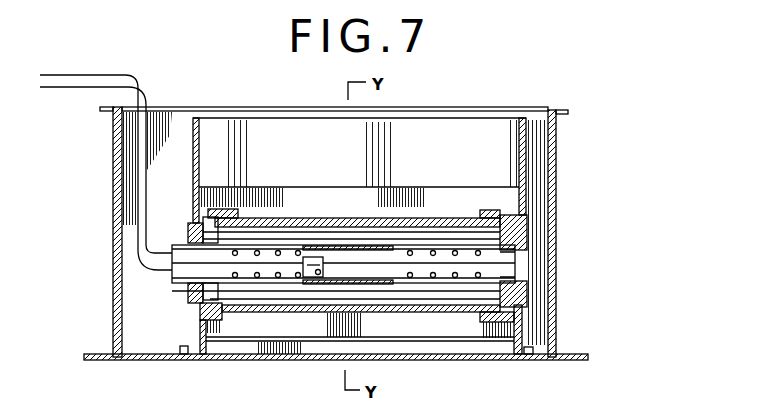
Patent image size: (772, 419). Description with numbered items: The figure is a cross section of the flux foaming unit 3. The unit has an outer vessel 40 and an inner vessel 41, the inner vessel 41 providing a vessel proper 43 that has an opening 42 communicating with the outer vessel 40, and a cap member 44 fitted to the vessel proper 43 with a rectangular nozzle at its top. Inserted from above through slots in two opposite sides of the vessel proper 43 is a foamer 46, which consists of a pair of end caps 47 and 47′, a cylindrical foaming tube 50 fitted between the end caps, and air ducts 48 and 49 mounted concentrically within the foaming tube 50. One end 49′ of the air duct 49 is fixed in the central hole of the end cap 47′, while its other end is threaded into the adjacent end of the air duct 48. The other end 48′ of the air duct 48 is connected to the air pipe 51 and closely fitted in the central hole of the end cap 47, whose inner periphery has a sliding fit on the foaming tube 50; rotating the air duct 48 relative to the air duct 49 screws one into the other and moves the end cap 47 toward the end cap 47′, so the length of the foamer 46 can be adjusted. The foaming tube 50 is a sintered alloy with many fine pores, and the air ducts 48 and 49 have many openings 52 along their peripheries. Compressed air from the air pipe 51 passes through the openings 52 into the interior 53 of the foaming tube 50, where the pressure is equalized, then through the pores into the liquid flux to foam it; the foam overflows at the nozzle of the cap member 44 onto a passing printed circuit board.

The flux foaming unit 3 is at (94, 190).
The outer vessel 40 is at (113, 252).
The inner vessel 41 is at (200, 325).
The opening 42 is at (333, 347).
The vessel proper 43 is at (518, 331).
The cap member 44 is at (521, 158).
The foamer 46 is at (387, 185).
The end cap 47 is at (195, 228).
The end cap 47′ is at (523, 242).
The air duct 48 is at (270, 243).
The other end of air duct 48′ is at (180, 287).
The air duct 49 is at (405, 248).
The one end of air duct 49′ is at (508, 265).
The cylindrical foaming tube 50 is at (337, 218).
The air pipe 51 is at (143, 90).
The openings 52 is at (318, 280).
The interior of foaming tube 53 is at (435, 293).